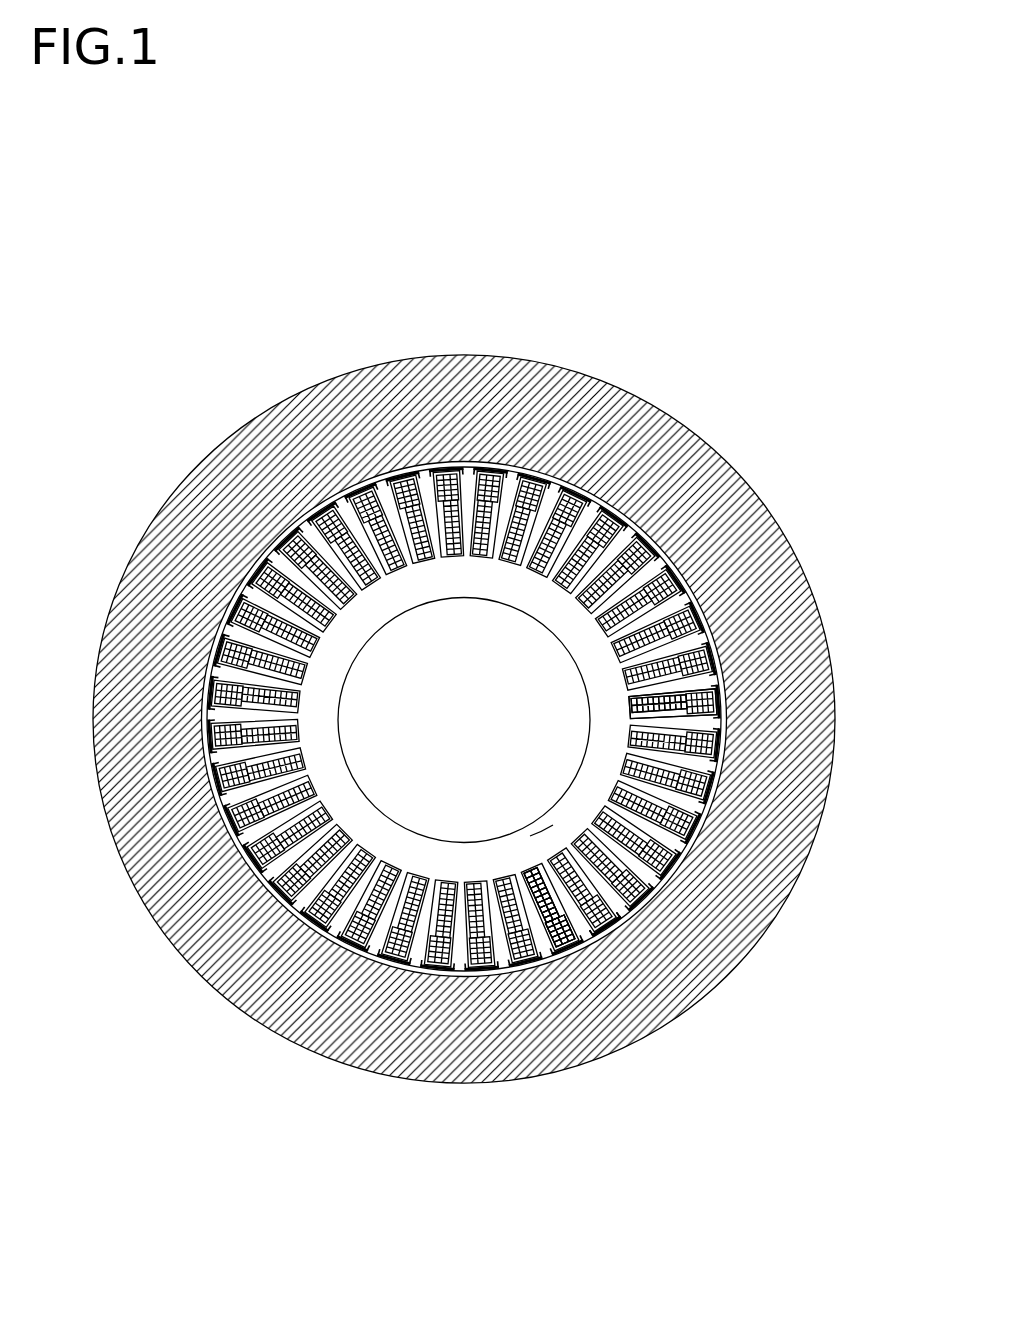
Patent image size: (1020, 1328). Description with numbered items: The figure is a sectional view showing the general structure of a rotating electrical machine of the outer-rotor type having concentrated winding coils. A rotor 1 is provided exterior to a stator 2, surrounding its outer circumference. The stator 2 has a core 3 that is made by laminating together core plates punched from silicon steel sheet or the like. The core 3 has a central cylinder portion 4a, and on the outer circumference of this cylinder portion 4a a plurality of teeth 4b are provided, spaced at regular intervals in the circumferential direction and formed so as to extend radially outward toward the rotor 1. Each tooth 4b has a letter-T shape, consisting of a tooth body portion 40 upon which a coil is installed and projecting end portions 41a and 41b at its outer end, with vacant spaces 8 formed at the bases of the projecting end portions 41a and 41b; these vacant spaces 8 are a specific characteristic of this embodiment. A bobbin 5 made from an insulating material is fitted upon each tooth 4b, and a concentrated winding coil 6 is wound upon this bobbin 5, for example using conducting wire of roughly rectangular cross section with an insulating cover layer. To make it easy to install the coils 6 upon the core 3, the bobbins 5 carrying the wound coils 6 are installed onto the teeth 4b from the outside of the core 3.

The rotor 1 is at (288, 483).
The stator 2 is at (688, 598).
The core 3 is at (556, 638).
The cylinder portion 4a is at (553, 825).
The teeth 4b is at (638, 1158).
The tooth body portion 40 is at (541, 930).
The projecting end portion 41a is at (540, 948).
The projecting end portion 41b is at (566, 940).
The bobbin 5 is at (653, 707).
The concentrated winding coil 6 is at (672, 718).
The vacant space 8 is at (622, 923).